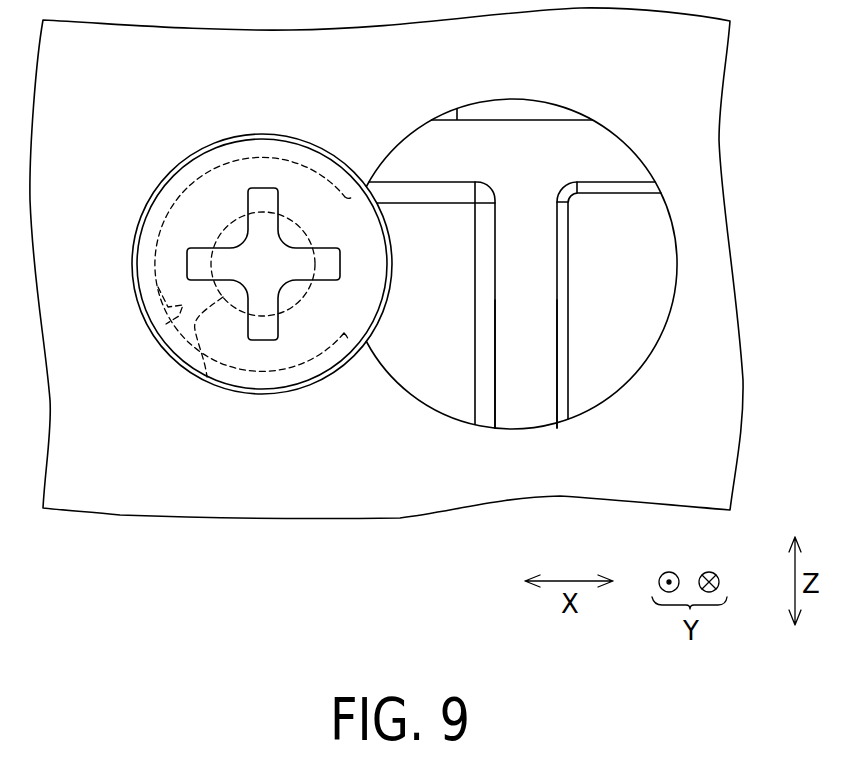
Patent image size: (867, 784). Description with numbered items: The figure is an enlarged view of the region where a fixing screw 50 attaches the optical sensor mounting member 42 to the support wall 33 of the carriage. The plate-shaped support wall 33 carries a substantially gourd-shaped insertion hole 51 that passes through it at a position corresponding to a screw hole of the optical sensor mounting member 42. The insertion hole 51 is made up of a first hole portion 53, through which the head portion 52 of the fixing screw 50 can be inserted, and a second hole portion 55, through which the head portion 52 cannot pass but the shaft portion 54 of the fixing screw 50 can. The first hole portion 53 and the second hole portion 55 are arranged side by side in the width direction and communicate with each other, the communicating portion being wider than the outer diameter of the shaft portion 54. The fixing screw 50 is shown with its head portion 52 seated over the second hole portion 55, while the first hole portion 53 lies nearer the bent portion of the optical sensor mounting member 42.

The support wall 33 is at (727, 336).
The optical sensor mounting member 42 is at (618, 151).
The fixing screw 50 is at (304, 388).
The insertion hole 51 is at (596, 86).
The head portion 52 is at (246, 393).
The first hole portion 53 is at (618, 382).
The shaft portion 54 is at (207, 377).
The second hole portion 55 is at (166, 324).